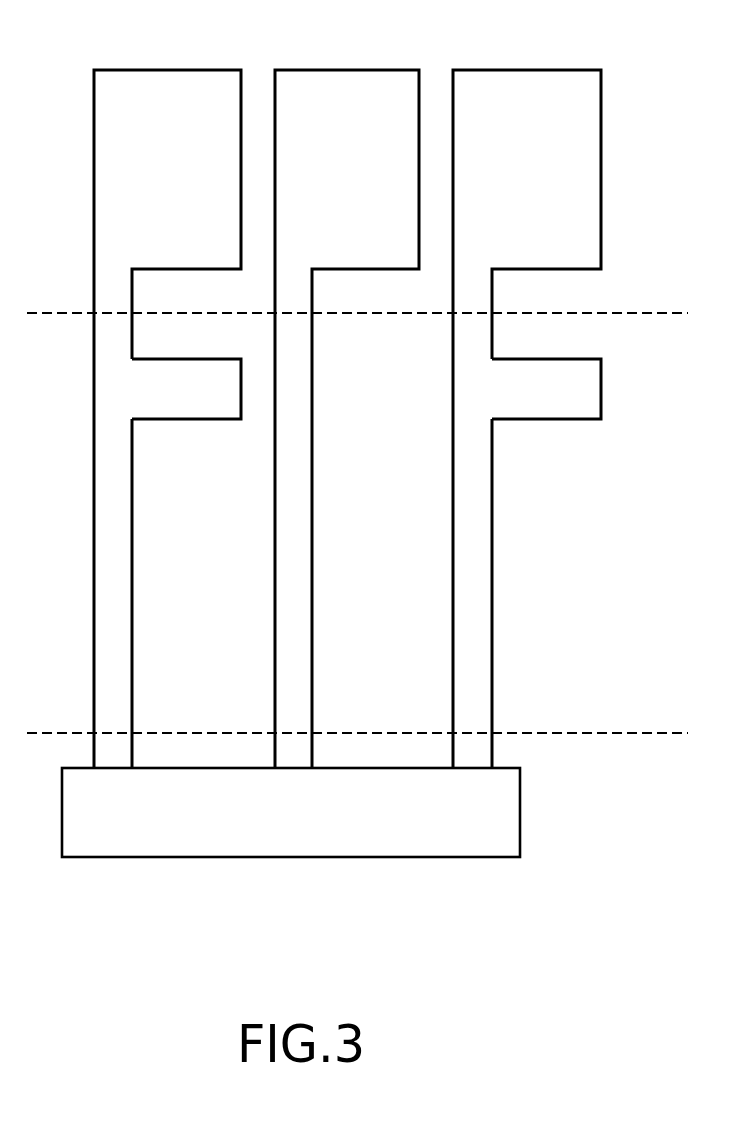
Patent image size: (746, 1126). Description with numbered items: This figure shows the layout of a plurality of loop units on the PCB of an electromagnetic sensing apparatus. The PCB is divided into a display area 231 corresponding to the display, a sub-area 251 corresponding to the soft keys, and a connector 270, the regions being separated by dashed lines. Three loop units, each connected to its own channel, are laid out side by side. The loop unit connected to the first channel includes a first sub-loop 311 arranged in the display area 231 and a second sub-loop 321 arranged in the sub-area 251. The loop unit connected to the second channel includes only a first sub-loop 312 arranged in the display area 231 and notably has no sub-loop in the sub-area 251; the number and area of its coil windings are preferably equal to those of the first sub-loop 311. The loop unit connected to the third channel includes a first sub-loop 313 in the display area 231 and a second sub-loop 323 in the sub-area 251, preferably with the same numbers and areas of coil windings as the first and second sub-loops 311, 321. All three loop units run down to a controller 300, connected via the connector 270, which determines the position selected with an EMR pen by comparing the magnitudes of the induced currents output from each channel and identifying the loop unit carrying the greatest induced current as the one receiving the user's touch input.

The first sub-loop 311 is at (165, 69).
The first sub-loop 312 is at (345, 69).
The first sub-loop 313 is at (526, 69).
The second sub-loop 321 is at (190, 420).
The second sub-loop 323 is at (549, 420).
The controller 300 is at (293, 858).
The display area 231 is at (672, 182).
The sub-area 251 is at (631, 557).
The connector 270 is at (632, 808).